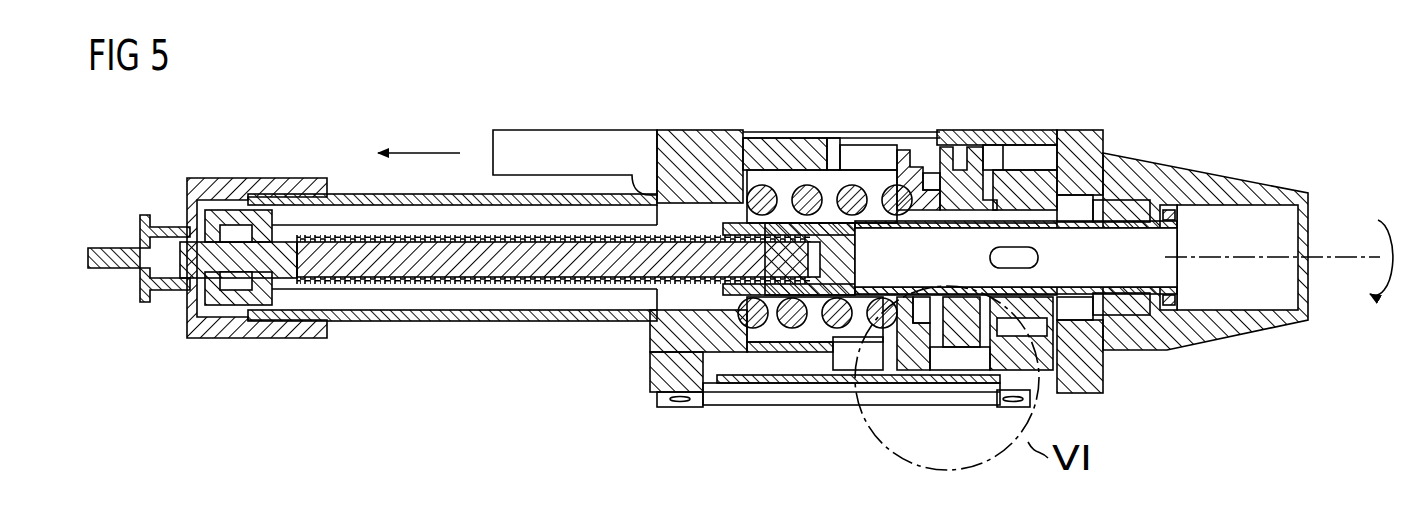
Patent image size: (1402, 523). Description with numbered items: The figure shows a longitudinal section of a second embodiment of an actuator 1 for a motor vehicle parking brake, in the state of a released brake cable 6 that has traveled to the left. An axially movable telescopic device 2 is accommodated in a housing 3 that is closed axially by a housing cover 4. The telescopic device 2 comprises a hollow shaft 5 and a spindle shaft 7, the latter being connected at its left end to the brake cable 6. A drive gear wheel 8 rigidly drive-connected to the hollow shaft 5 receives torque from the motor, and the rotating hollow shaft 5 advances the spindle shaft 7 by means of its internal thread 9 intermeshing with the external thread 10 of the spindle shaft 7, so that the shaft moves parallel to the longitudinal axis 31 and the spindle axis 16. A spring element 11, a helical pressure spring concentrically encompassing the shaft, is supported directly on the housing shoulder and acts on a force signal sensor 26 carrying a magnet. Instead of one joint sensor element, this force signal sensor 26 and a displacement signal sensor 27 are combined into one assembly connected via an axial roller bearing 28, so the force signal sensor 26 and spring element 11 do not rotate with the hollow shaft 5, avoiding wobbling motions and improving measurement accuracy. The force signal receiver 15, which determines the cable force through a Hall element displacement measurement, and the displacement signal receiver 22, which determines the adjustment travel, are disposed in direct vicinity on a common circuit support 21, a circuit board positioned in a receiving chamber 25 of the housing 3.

The actuator 1 is at (714, 100).
The telescopic device 2 is at (680, 286).
The housing 3 is at (560, 140).
The housing cover 4 is at (1165, 180).
The hollow shaft 5 is at (772, 192).
The brake cable 6 is at (105, 268).
The spindle shaft 7 is at (392, 302).
The drive gear wheel 8 is at (1027, 186).
The internal thread 9 is at (806, 205).
The external thread 10 is at (448, 245).
The spring element 11 is at (788, 318).
The force signal receiver 15 is at (925, 368).
The spindle axis 16 is at (1372, 256).
The circuit support 21 is at (815, 362).
The displacement signal receiver 22 is at (968, 370).
The receiving chamber 25 is at (705, 393).
The force signal sensor 26 is at (925, 166).
The displacement signal sensor 27 is at (958, 168).
The axial roller bearing 28 is at (945, 295).
The longitudinal axis 31 is at (425, 150).